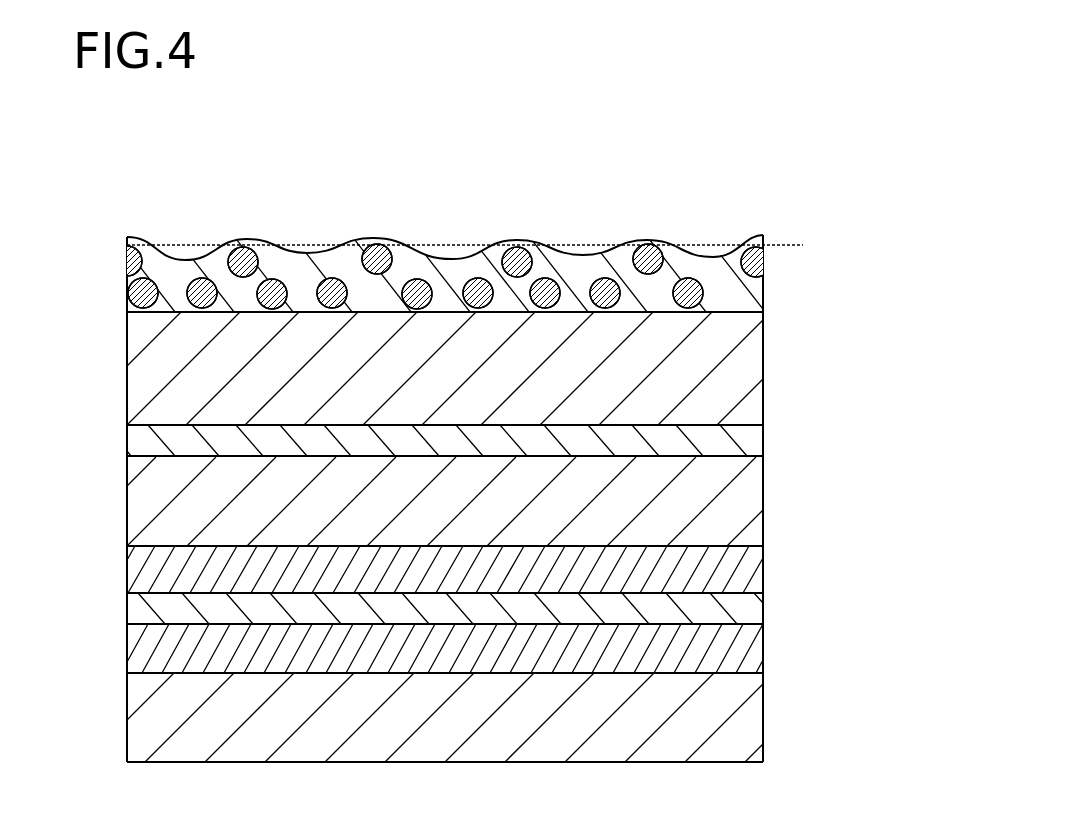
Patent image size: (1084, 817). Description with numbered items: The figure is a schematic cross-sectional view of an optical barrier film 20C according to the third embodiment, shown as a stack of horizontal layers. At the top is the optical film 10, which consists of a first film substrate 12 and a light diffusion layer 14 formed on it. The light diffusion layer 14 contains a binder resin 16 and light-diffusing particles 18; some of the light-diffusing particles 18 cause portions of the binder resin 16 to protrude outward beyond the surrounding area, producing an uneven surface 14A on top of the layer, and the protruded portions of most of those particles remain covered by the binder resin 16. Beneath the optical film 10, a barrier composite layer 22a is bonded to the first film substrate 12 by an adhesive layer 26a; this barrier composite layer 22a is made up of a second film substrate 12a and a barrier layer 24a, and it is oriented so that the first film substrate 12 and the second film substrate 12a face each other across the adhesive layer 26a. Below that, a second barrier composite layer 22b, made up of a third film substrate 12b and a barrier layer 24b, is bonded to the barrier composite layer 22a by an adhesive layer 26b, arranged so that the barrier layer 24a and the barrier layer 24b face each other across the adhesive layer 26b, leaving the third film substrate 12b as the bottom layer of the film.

The optical barrier film 20C is at (766, 140).
The optical film 10 is at (862, 235).
The light diffusion layer 14 is at (745, 294).
The uneven surface 14A is at (697, 242).
The binder resin 16 is at (716, 266).
The light-diffusing particles 18 is at (198, 284).
The first film substrate 12 is at (745, 357).
The adhesive layer 26a is at (745, 440).
The barrier composite layer 22a is at (862, 457).
The second film substrate 12a is at (745, 502).
The barrier layer 24a is at (745, 569).
The adhesive layer 26b is at (745, 605).
The barrier composite layer 22b is at (862, 624).
The barrier layer 24b is at (745, 651).
The third film substrate 12b is at (745, 718).